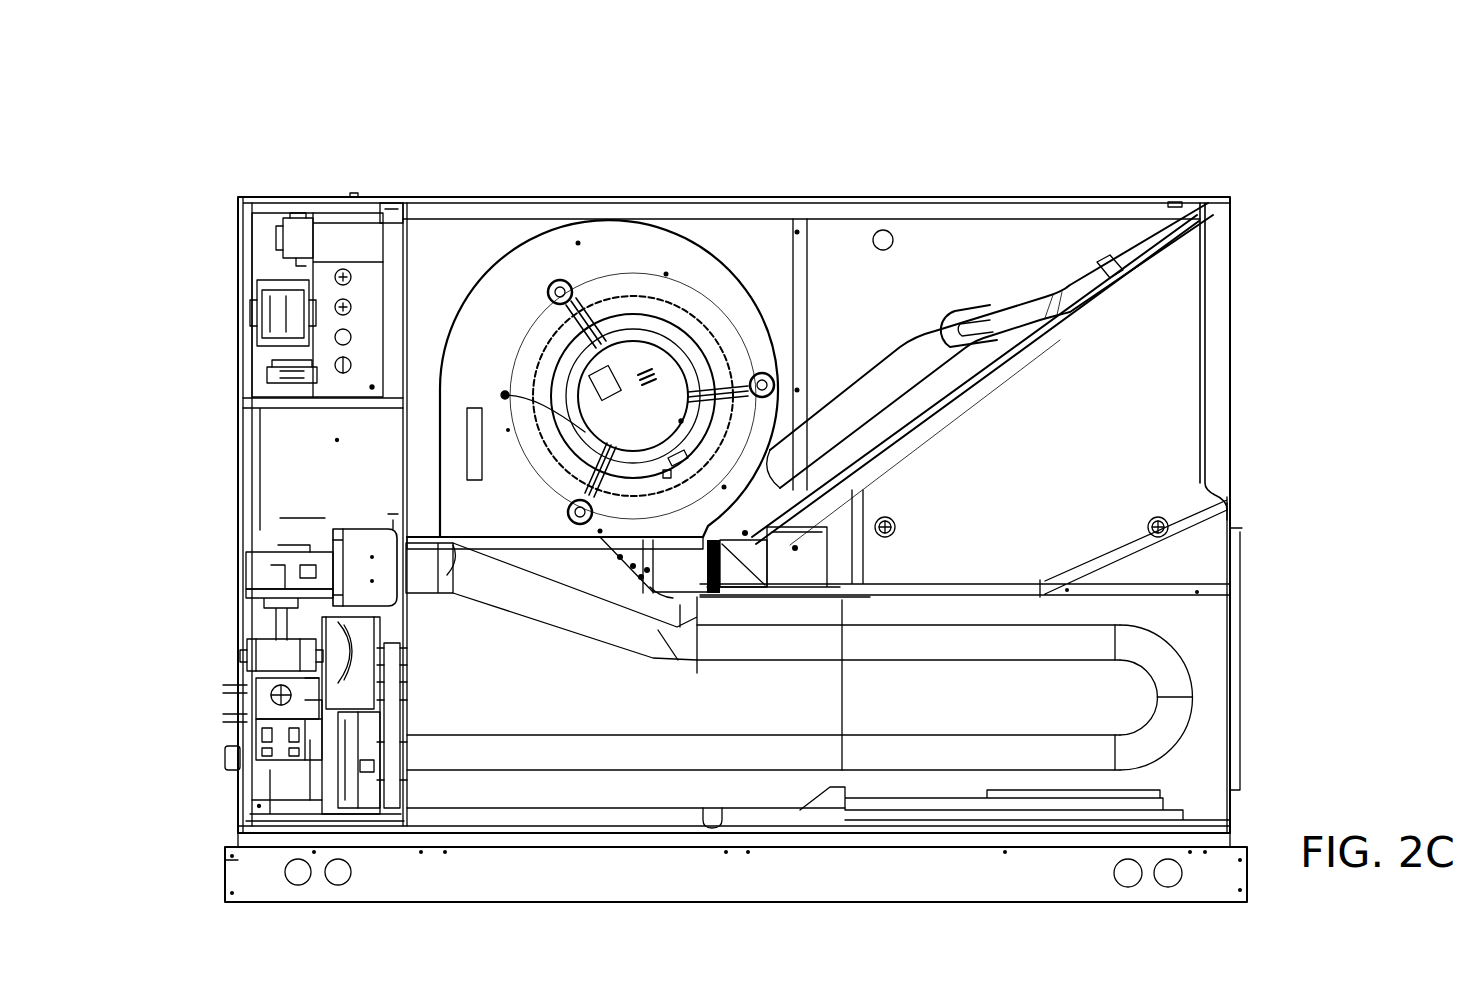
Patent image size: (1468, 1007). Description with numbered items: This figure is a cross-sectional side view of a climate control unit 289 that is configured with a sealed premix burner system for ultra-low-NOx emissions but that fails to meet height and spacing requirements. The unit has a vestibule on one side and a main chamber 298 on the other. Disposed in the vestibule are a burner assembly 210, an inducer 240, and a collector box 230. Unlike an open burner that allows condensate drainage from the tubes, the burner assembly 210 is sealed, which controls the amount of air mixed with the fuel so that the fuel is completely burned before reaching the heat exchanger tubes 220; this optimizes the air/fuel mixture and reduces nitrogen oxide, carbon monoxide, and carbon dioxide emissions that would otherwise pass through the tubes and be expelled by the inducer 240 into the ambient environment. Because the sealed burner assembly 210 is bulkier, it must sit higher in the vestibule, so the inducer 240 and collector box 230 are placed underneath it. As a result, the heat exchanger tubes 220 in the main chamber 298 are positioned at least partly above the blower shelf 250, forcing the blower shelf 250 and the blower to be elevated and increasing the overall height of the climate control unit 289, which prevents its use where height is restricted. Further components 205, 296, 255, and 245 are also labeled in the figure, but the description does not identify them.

The climate control unit 289 is at (204, 118).
The control box 205 is at (214, 302).
The partition panel 296 is at (408, 405).
The blower assembly 255 is at (740, 218).
The main chamber 298 is at (958, 227).
The burner assembly 210 is at (252, 534).
The gas valve 245 is at (307, 681).
The inducer 240 is at (256, 779).
The collector box 230 is at (372, 777).
The blower shelf 250 is at (590, 598).
The heat exchanger tubes 220 is at (972, 798).